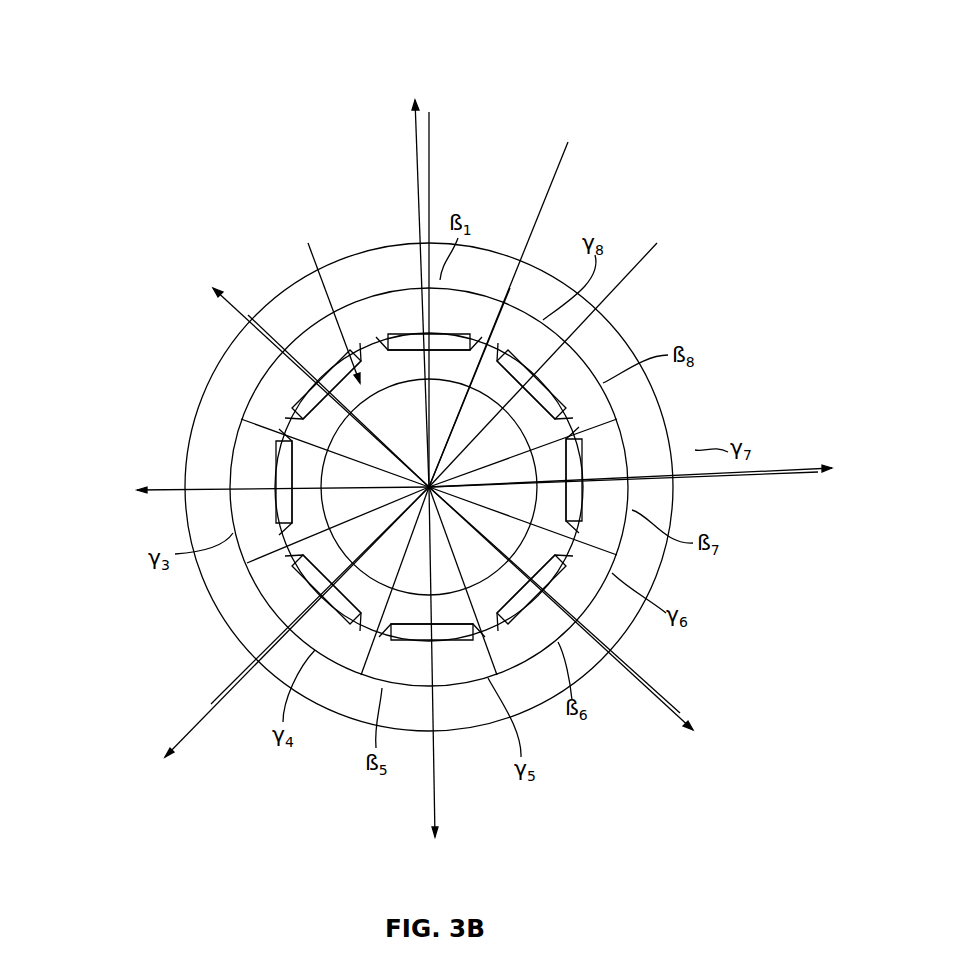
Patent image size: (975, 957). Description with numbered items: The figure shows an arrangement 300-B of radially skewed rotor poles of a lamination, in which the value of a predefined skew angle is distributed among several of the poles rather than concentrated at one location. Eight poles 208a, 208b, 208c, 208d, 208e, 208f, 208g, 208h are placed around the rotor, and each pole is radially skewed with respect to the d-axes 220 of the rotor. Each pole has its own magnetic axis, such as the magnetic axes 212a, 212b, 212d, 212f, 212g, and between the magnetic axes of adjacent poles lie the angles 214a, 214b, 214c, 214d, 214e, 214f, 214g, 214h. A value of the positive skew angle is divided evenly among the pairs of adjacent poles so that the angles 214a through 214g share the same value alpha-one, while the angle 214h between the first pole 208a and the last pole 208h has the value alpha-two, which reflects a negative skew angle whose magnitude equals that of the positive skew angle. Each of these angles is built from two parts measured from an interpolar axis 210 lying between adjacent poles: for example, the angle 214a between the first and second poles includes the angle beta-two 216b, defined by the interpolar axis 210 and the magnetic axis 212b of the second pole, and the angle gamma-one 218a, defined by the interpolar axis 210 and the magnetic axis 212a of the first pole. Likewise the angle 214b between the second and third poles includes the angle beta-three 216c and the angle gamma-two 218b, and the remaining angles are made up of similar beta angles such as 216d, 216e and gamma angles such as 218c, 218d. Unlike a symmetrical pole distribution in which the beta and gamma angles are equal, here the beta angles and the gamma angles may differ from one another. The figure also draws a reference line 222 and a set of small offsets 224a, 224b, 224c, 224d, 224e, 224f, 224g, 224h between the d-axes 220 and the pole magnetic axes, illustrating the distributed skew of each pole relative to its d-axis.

The arrangement 300-B is at (680, 75).
The first pole 208a is at (420, 362).
The second pole 208b is at (292, 343).
The third pole 208c is at (307, 465).
The pole 208d is at (290, 560).
The pole 208e is at (445, 600).
The pole 208f is at (520, 560).
The pole 208g is at (550, 463).
The pole 208h is at (537, 323).
The interpolar axis 210 is at (380, 392).
The magnetic axis of the first pole 212a is at (432, 140).
The magnetic axis of the second pole 212b is at (298, 302).
The magnetic axis 212d is at (213, 703).
The magnetic axis 212f is at (680, 708).
The magnetic axis 212g is at (818, 470).
The angle between first and second poles magnetic axes 214a is at (407, 245).
The angle between second and third poles 214b is at (193, 410).
The angle between adjacent poles 214c is at (193, 532).
The angle between adjacent poles 214d is at (355, 720).
The angle between adjacent poles 214e is at (513, 678).
The angle between adjacent poles 214f is at (667, 567).
The angle between adjacent poles 214g is at (607, 316).
The angle between adjacent poles 208a and 208h 214h is at (493, 245).
The angle beta-two 216b is at (255, 318).
The angle beta-three 216c is at (228, 463).
The angle beta-four 216d is at (340, 565).
The angle beta-five 216e is at (412, 688).
The angle gamma-one 218a is at (395, 285).
The angle gamma-two 218b is at (253, 383).
The angle gamma-three 218c is at (247, 563).
The angle gamma-four 218d is at (355, 628).
The d-axes 220 is at (415, 140).
The reference line 222 is at (560, 158).
The angular offset 224a is at (465, 162).
The angular offset 224b is at (297, 303).
The angular offset 224c is at (163, 527).
The angular offset 224d is at (195, 678).
The angular offset 224e is at (395, 779).
The angular offset 224f is at (647, 742).
The angular offset 224g is at (695, 450).
The angular offset 224h is at (610, 228).